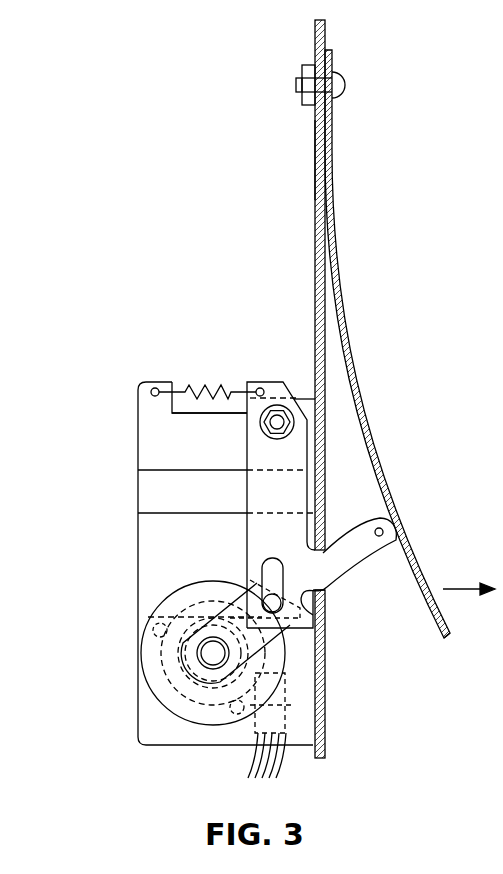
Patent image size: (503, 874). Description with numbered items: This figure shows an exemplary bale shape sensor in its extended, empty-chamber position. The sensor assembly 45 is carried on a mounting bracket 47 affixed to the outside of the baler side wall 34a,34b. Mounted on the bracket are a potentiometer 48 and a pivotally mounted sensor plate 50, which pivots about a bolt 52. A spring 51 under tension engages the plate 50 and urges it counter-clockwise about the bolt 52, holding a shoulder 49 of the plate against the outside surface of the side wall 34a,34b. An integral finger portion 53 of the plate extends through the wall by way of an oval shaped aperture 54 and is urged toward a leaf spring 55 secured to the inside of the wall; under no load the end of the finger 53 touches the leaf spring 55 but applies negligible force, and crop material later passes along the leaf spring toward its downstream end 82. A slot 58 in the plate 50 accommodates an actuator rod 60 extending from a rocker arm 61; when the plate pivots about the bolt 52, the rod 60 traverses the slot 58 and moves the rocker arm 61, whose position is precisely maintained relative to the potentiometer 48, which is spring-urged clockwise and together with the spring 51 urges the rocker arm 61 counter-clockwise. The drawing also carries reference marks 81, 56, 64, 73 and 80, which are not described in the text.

The mounting plate 81 is at (330, 45).
The fastener 56 is at (345, 85).
The side wall 34a,34b is at (315, 152).
The leaf spring 55 is at (350, 352).
The downstream end 82 is at (447, 642).
The sensor assembly 45 is at (152, 338).
The mounting bracket 47 is at (138, 452).
The housing wall 64 is at (148, 560).
The bolt 52 is at (277, 422).
The spring 51 is at (195, 388).
The sensor plate 50 is at (232, 410).
The slot 58 is at (272, 558).
The actuator rod 60 is at (273, 610).
The rocker arm 61 is at (240, 650).
The wheel 73 is at (152, 702).
The potentiometer 48 is at (203, 717).
The oval shaped aperture 54 is at (325, 545).
The finger portion 53 is at (350, 563).
The pivot pin 80 is at (379, 536).
The shoulder 49 is at (300, 600).